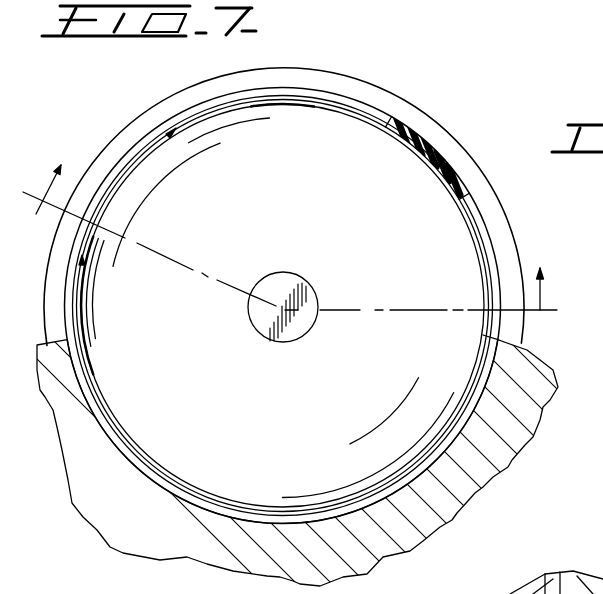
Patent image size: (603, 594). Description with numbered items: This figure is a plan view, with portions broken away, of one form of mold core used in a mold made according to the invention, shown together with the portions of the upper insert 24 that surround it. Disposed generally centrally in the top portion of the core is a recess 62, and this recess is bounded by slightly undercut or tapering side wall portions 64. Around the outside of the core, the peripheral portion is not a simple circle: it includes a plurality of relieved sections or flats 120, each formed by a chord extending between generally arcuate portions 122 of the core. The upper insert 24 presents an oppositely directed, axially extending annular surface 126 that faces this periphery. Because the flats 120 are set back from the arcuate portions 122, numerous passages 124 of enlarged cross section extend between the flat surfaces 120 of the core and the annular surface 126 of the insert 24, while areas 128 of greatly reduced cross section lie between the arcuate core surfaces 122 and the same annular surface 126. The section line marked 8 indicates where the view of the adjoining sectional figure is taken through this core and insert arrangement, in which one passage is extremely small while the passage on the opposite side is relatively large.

The section line 8- 8 is at (290, 251).
The upper insert 24 is at (443, 527).
The recess 62 is at (305, 330).
The tapering side wall portions 64 is at (291, 283).
The flats 120 is at (297, 104).
The arcuate portions 122 is at (217, 108).
The passages 124 is at (257, 517).
The annular surface 126 is at (132, 457).
The areas of greatly reduced cross section 128 is at (352, 508).